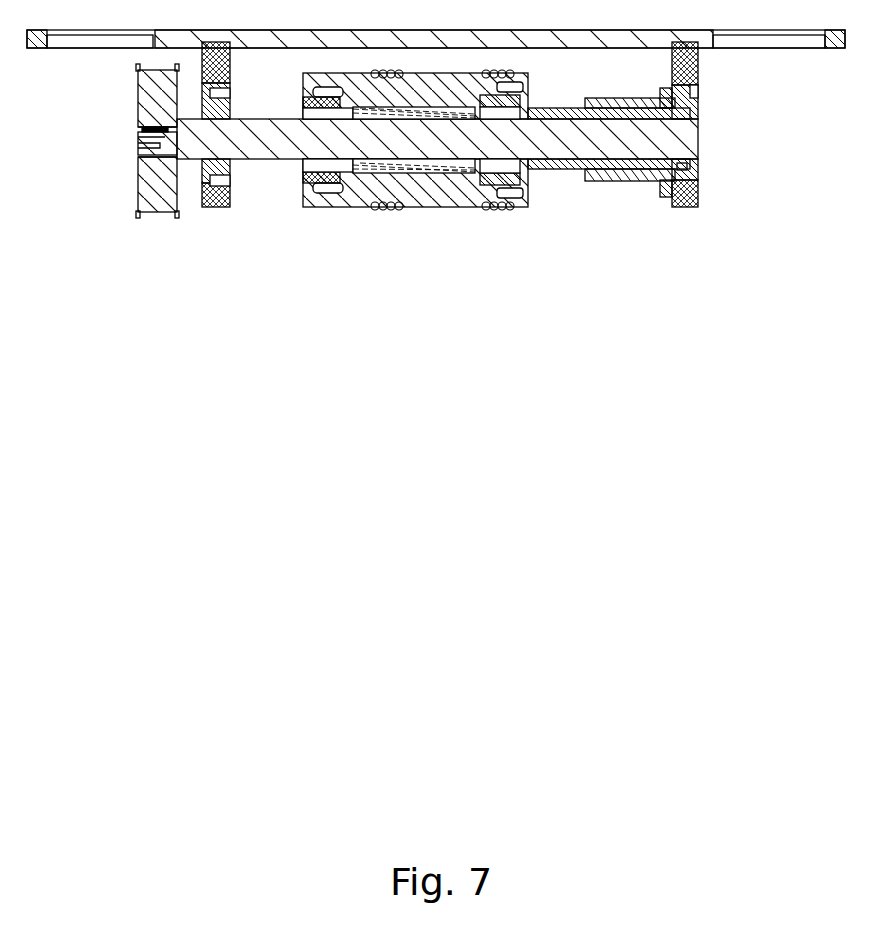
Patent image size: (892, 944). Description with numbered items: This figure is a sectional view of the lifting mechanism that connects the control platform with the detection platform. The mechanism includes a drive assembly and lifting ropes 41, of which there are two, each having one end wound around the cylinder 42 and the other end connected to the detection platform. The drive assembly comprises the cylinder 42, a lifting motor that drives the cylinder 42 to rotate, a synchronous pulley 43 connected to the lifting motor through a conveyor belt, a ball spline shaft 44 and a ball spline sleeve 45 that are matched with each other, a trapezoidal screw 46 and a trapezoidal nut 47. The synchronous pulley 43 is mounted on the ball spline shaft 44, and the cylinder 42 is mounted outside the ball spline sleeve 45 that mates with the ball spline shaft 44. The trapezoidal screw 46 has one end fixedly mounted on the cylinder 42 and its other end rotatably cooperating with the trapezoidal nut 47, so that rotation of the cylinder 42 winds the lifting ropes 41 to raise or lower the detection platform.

The lifting ropes 41 is at (495, 215).
The cylinder 42 is at (358, 200).
The synchronous pulley 43 is at (158, 198).
The ball spline shaft 44 is at (275, 153).
The ball spline sleeve 45 is at (420, 176).
The trapezoidal screw 46 is at (548, 175).
The trapezoidal nut 47 is at (632, 183).